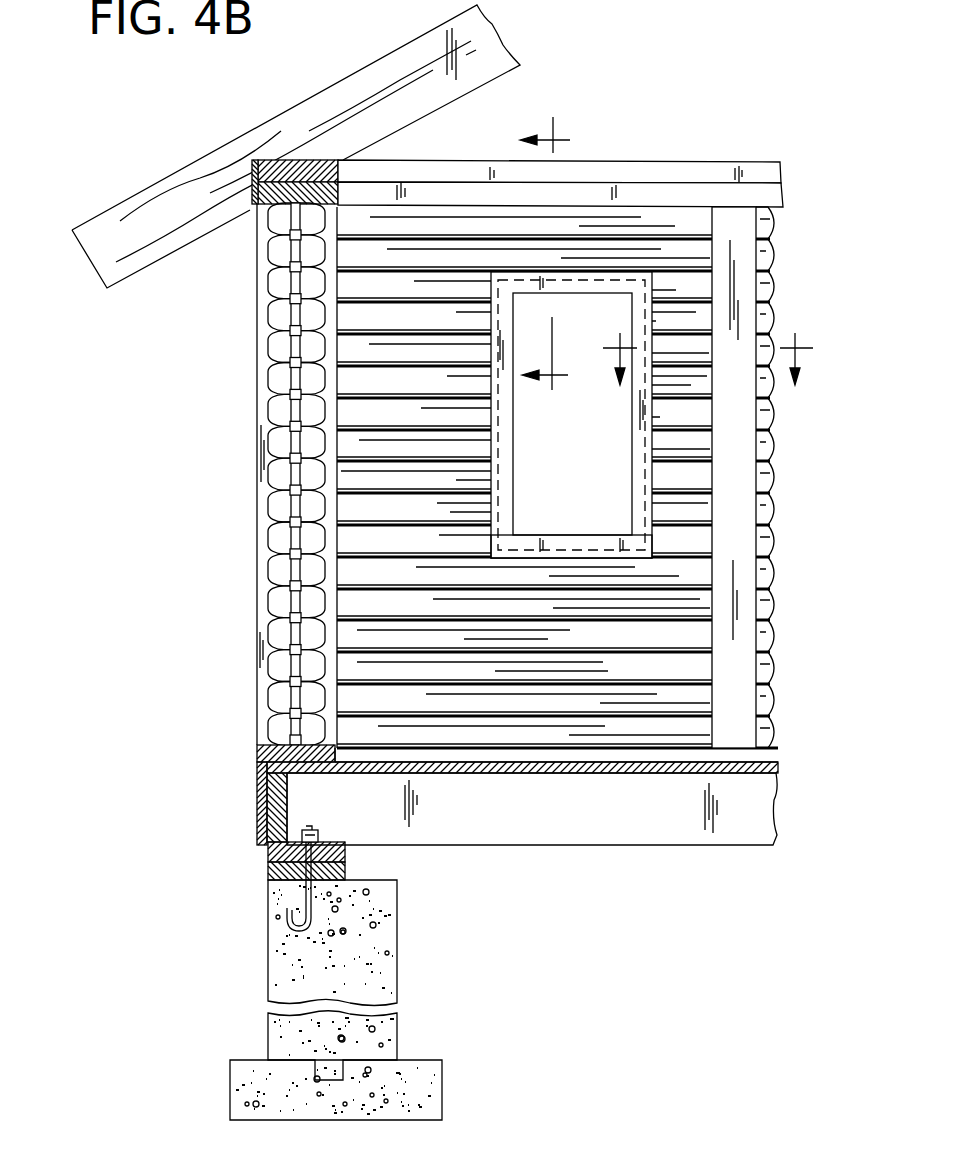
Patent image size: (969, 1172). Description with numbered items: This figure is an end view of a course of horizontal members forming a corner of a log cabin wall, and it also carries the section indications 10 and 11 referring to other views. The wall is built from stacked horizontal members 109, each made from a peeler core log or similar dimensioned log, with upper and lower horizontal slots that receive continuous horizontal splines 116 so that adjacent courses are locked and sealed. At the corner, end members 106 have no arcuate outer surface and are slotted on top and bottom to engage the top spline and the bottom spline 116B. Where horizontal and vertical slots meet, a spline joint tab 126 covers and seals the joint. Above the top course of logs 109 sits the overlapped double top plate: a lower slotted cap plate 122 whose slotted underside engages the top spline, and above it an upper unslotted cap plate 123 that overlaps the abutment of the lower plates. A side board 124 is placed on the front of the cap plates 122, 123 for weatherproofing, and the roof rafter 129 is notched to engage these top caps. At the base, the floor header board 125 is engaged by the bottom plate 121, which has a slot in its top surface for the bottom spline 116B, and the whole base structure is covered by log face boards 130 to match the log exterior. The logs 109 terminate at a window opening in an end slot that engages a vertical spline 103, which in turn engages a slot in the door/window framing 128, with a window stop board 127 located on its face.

The section line 10- 10 is at (555, 261).
The section line 11- 11 is at (713, 354).
The vertical spline 103 is at (298, 347).
The end member 106 is at (257, 397).
The horizontal member 109 is at (278, 537).
The horizontal spline 116 is at (292, 614).
The bottom spline 116B is at (292, 742).
The bottom plate 121 is at (258, 758).
The lower slotted cap plate 122 is at (257, 212).
The upper unslotted cap plate 123 is at (263, 172).
The side board 124 is at (253, 200).
The floor header board 125 is at (542, 823).
The spline joint tab 126 is at (292, 655).
The window stop board 127 is at (505, 443).
The door/window framing 128 is at (585, 545).
The roof rafter 129 is at (420, 90).
The log face board 130 is at (258, 793).